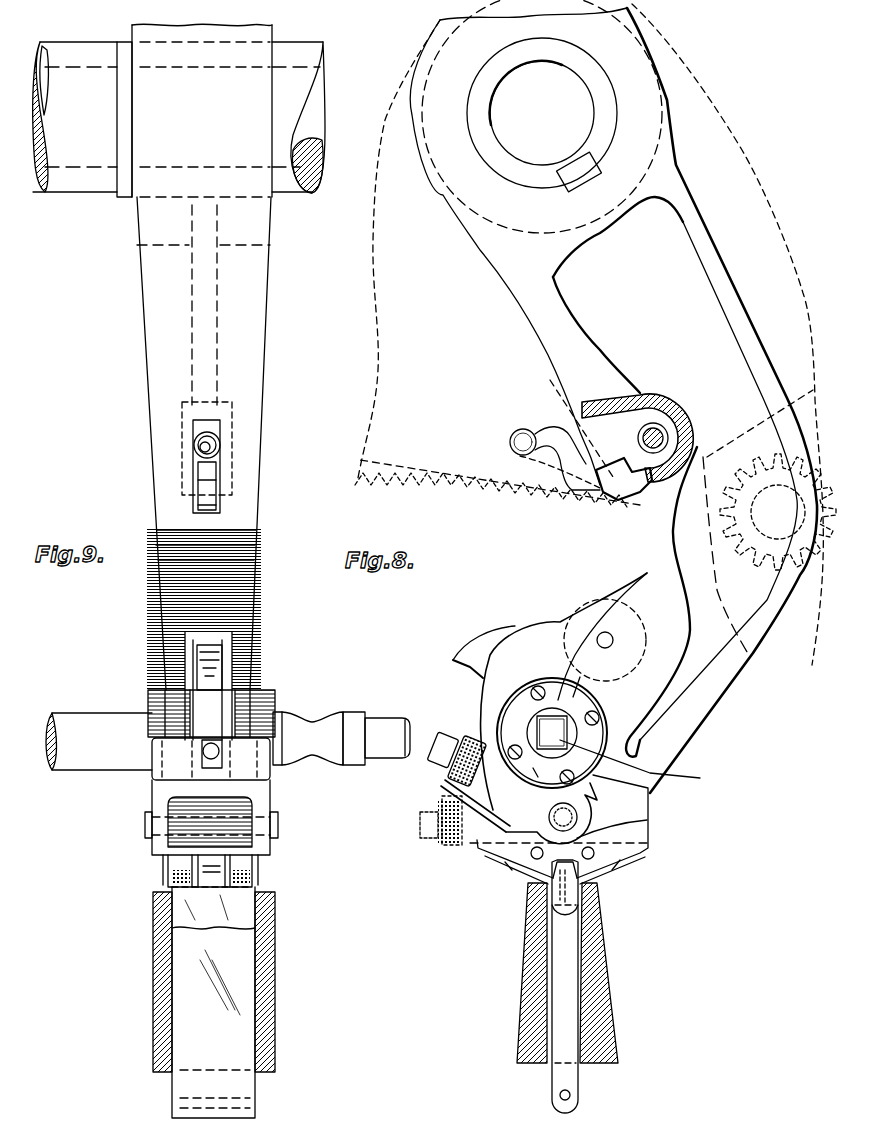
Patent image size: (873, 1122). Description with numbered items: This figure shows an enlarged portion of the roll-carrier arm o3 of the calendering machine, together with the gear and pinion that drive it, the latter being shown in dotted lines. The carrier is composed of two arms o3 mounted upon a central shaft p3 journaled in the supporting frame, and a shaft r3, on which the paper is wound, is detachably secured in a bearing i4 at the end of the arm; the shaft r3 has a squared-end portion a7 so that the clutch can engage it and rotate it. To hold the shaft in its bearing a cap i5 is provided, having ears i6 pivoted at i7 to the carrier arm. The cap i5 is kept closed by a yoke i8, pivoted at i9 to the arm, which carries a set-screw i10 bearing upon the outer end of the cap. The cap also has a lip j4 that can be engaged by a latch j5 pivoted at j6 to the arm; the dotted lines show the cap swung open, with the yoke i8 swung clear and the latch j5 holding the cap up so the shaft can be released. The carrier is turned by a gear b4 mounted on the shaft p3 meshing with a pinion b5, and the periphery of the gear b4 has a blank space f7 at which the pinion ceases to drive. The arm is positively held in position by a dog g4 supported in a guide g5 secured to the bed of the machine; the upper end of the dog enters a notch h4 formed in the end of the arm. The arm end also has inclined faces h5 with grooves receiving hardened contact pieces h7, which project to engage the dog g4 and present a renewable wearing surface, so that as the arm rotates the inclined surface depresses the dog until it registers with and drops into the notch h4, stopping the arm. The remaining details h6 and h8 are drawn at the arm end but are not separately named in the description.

In FIG. 9, the central shaft p3 is at (90, 150).
In FIG. 8, the central shaft p3 is at (600, 125).
In FIG. 9, the arm o3 is at (165, 355).
In FIG. 8, the arm o3 is at (537, 312).
In FIG. 9, the lip j4 is at (215, 665).
In FIG. 8, the lip j4 is at (535, 432).
In FIG. 9, the latch j5 is at (215, 490).
In FIG. 8, the latch j5 is at (585, 472).
In FIG. 8, the pivot j6 is at (655, 425).
In FIG. 9, the bearing i4 is at (272, 705).
In FIG. 8, the bearing i4 is at (608, 734).
In FIG. 9, the cap i5 is at (172, 820).
In FIG. 8, the cap i5 is at (485, 480).
In FIG. 8, the ears i6 is at (540, 628).
In FIG. 8, the pivot i7 is at (613, 640).
In FIG. 9, the yoke i8 is at (170, 752).
In FIG. 8, the yoke i8 is at (452, 778).
In FIG. 8, the pivot i9 is at (577, 817).
In FIG. 9, the set-screw i10 is at (222, 752).
In FIG. 8, the set-screw i10 is at (443, 745).
In FIG. 9, the shaft r3 is at (88, 750).
In FIG. 8, the notch h4 is at (600, 814).
In FIG. 9, the inclined face h5 is at (240, 870).
In FIG. 8, the inclined face h5 is at (507, 866).
In FIG. 9, the pin h6 is at (185, 858).
In FIG. 9, the contact-piece h7 is at (188, 878).
In FIG. 8, the contact-piece h7 is at (487, 860).
In FIG. 8, the notch h8 is at (530, 882).
In FIG. 9, the dog g4 is at (232, 952).
In FIG. 8, the dog g4 is at (570, 960).
In FIG. 9, the guide g5 is at (262, 970).
In FIG. 8, the guide g5 is at (605, 985).
In FIG. 8, the gear b4 is at (593, 334).
In FIG. 8, the pinion b5 is at (595, 532).
In FIG. 8, the blank space f7 is at (745, 665).
In FIG. 9, the squared-end portion a7 is at (392, 742).
In FIG. 8, the squared-end portion a7 is at (637, 761).